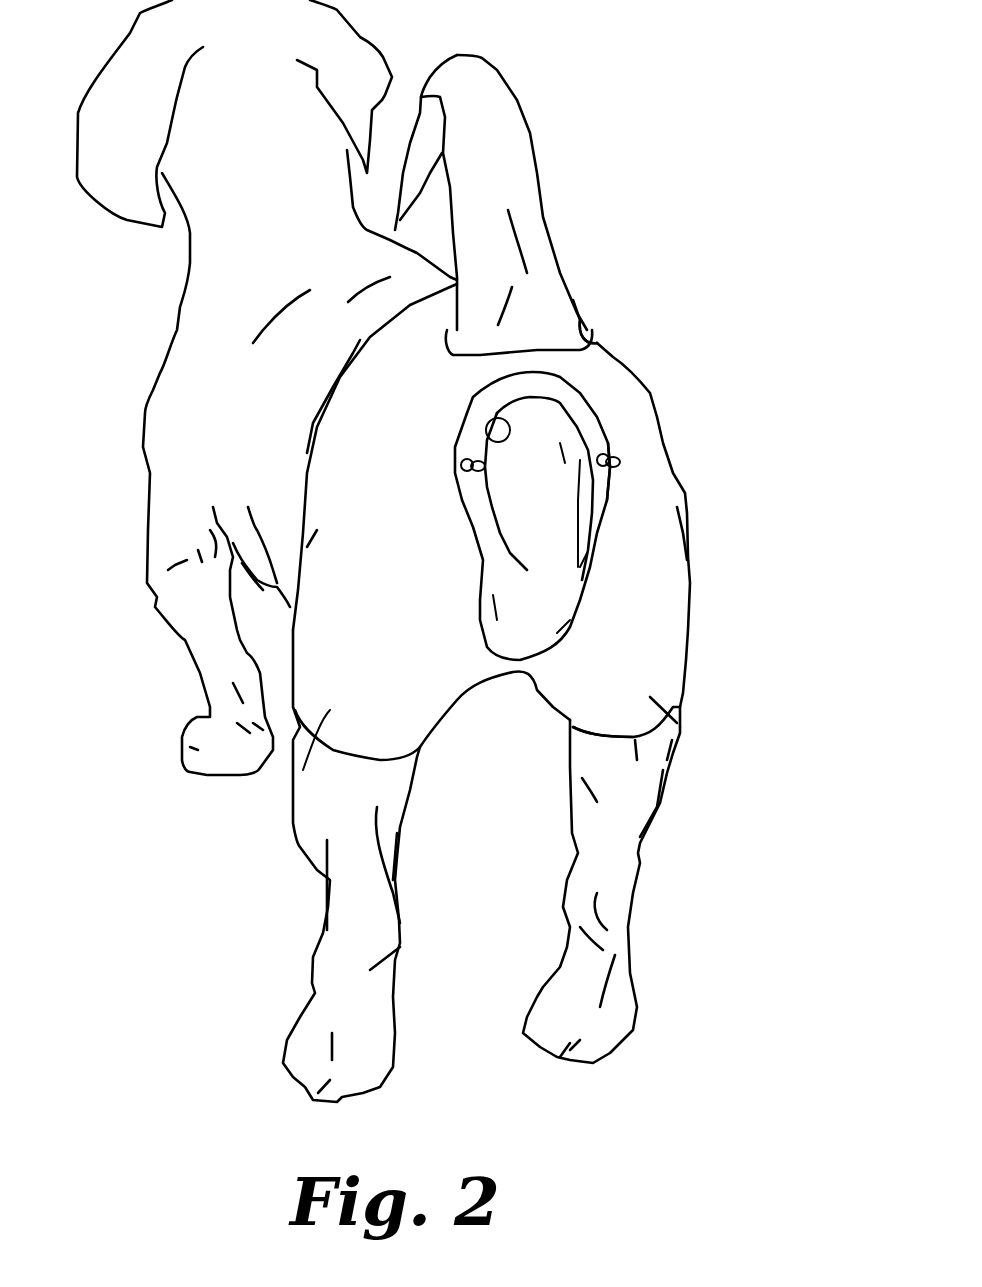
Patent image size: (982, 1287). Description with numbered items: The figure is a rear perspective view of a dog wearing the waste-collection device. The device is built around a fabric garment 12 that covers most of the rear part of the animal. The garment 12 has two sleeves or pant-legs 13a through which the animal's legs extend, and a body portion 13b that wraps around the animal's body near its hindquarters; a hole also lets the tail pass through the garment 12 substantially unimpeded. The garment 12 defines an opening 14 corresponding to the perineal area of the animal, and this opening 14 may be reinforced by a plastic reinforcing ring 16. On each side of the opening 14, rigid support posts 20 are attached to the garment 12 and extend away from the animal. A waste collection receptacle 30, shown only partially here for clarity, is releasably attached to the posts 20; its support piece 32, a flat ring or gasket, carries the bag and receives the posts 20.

The garment 12 is at (688, 448).
The sleeves or pant-legs 13a is at (303, 770).
The body portion 13b is at (593, 330).
The opening 14 is at (486, 441).
The plastic reinforcing ring 16 is at (483, 405).
The rigid support posts 20 is at (462, 473).
The waste collection receptacle 30 is at (605, 552).
The support piece 32 is at (630, 496).